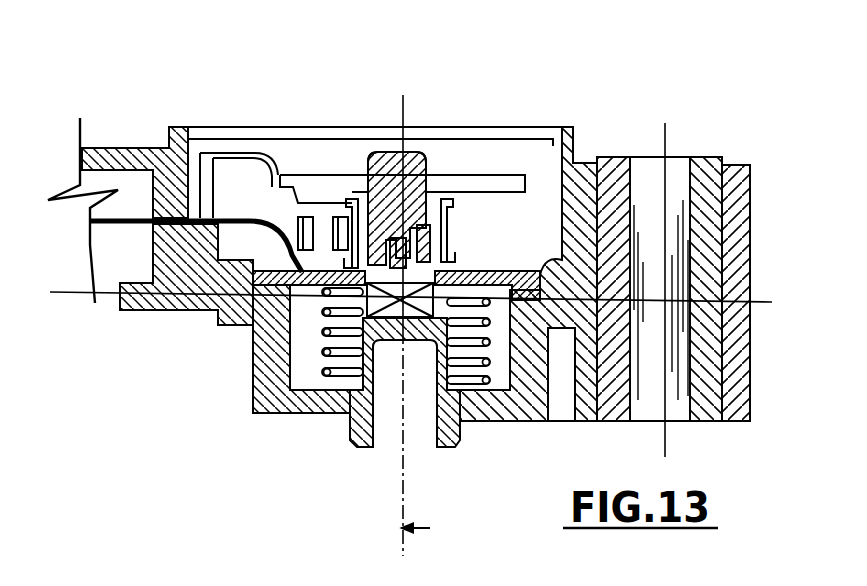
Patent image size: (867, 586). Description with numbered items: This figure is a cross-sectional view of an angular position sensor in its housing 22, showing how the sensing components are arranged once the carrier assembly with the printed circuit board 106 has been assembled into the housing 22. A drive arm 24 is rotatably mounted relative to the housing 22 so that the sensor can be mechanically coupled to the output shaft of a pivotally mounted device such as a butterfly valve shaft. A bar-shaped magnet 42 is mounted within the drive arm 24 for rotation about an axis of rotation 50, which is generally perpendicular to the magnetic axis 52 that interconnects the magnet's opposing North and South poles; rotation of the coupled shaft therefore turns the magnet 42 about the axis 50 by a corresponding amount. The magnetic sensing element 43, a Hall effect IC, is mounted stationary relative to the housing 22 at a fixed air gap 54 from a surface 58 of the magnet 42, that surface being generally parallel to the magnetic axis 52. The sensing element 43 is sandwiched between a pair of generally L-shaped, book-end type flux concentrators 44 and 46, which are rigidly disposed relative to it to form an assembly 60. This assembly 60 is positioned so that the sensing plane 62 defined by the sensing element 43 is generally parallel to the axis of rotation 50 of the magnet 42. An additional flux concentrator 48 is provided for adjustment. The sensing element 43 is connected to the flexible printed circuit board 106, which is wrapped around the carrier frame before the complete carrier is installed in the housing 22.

The housing 22 is at (600, 126).
The drive arm 24 is at (352, 435).
The magnet 42 is at (367, 313).
The magnetic sensing element 43 is at (400, 215).
The flux concentrator 44 is at (378, 232).
The flux concentrator 46 is at (428, 236).
The additional flux concentrator 48 is at (487, 183).
The axis of rotation 50 is at (428, 528).
The magnetic axis 52 is at (77, 288).
The air gap 54 is at (437, 275).
The magnet surface 58 is at (220, 313).
The assembly 60 is at (406, 250).
The sensing plane 62 is at (372, 190).
The flexible printed circuit board 106 is at (443, 227).